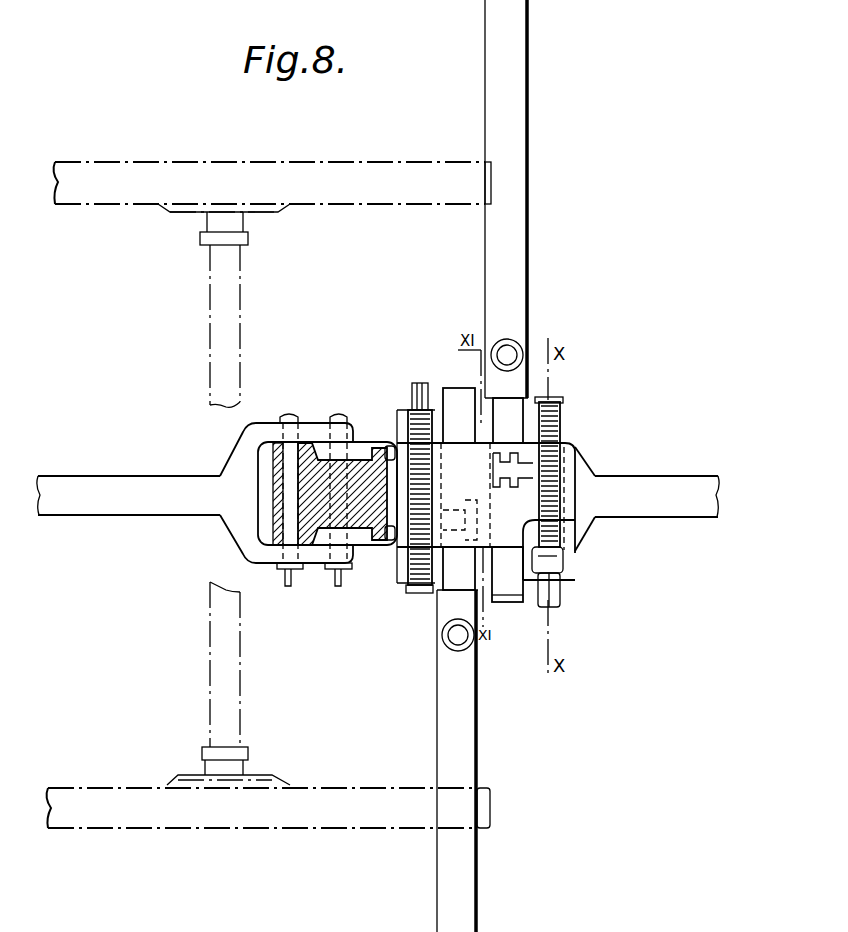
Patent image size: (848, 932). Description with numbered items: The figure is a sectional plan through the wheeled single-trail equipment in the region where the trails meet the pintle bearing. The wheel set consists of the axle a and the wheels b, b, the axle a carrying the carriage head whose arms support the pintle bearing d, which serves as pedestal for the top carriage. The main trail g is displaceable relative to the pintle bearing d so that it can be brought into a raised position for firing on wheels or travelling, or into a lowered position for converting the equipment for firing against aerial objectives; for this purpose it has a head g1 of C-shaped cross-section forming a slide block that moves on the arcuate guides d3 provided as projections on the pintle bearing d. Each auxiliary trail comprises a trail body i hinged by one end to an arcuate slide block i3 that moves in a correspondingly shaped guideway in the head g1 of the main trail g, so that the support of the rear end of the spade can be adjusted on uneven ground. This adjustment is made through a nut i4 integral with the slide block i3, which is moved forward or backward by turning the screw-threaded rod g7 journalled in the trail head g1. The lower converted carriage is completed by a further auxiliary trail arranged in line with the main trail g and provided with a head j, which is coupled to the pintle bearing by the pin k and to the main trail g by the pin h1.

The axle a is at (237, 319).
The wheels b is at (362, 194).
The trail body i is at (515, 140).
The arcuate slide block i3 is at (456, 405).
The nut i4 is at (577, 442).
The head j is at (251, 432).
The pin k is at (283, 415).
The pin h1 is at (341, 414).
The pintle bearing d is at (313, 462).
The guides d3 is at (388, 452).
The main trail g is at (628, 512).
The head g1 is at (577, 466).
The screw-threaded rod g7 is at (561, 406).